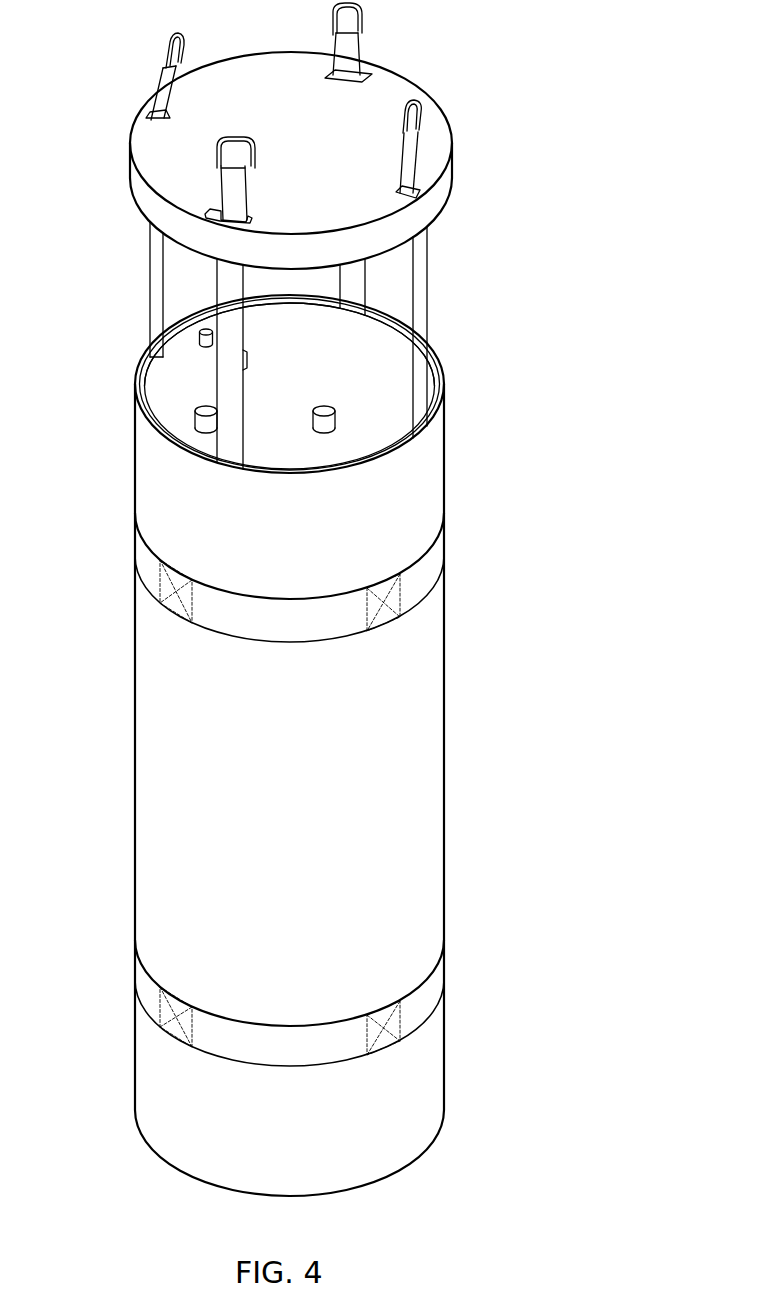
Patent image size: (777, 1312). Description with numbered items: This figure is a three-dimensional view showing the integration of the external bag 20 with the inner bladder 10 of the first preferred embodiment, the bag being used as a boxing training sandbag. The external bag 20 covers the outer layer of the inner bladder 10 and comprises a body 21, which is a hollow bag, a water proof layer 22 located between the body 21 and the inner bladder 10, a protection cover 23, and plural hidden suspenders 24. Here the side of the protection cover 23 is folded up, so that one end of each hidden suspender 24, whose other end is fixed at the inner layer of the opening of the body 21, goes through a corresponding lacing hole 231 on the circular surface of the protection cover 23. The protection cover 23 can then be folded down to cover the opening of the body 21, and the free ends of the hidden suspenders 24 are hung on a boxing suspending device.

The inner bladder 10 is at (376, 433).
The external bag 20 is at (303, 745).
The body 21 is at (137, 455).
The water proof layer 22 is at (140, 363).
The protection cover 23 is at (244, 160).
The lacing holes 231 is at (148, 110).
The hidden suspenders 24 is at (145, 45).